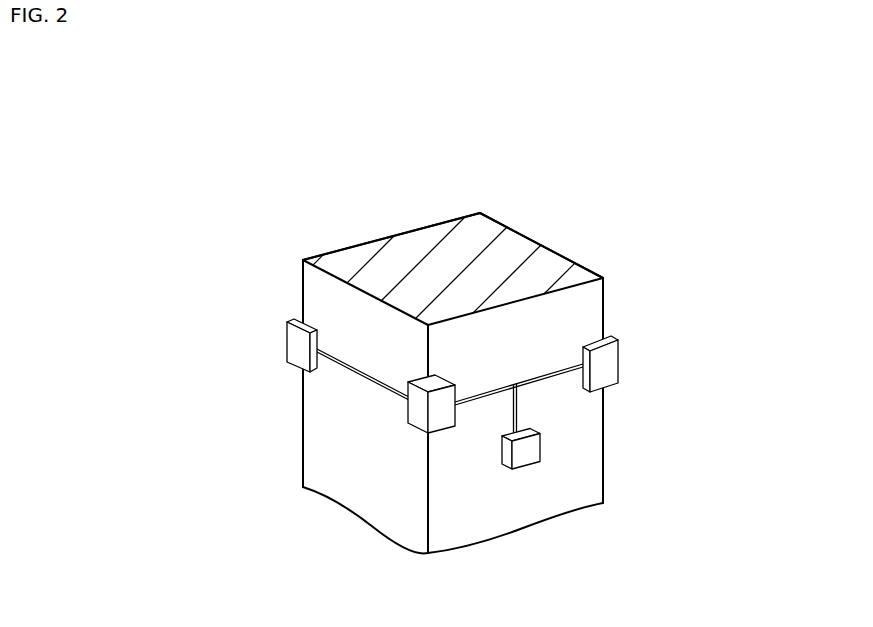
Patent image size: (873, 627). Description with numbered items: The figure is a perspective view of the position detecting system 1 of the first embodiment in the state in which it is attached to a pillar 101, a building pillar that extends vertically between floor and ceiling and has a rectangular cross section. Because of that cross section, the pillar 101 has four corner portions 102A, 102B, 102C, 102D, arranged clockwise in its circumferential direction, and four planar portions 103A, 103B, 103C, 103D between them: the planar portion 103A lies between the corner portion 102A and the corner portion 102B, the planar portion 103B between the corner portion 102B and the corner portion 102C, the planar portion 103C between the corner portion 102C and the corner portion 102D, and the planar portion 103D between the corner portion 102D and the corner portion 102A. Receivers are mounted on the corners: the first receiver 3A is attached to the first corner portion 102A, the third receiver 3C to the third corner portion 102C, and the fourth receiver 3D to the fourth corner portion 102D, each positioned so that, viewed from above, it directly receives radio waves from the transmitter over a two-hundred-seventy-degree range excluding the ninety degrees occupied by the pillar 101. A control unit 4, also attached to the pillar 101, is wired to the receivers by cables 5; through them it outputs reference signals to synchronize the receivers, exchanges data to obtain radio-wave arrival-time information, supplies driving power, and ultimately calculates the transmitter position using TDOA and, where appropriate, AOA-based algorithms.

The position detecting system 1 is at (594, 174).
The pillar 101 is at (432, 240).
The first corner portion 102A is at (300, 408).
The second corner portion 102B is at (480, 211).
The third corner portion 102C is at (605, 446).
The fourth corner portion 102D is at (425, 532).
The planar portion 103A is at (362, 243).
The planar portion 103B is at (552, 249).
The planar portion 103C is at (562, 508).
The planar portion 103D is at (355, 502).
The first receiver 3A is at (295, 345).
The third receiver 3C is at (608, 363).
The fourth receiver 3D is at (414, 418).
The control unit 4 is at (528, 459).
The cables 5 is at (348, 370).